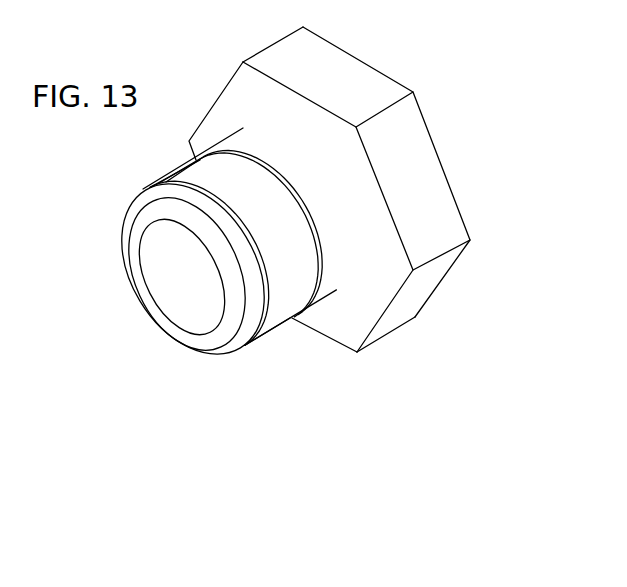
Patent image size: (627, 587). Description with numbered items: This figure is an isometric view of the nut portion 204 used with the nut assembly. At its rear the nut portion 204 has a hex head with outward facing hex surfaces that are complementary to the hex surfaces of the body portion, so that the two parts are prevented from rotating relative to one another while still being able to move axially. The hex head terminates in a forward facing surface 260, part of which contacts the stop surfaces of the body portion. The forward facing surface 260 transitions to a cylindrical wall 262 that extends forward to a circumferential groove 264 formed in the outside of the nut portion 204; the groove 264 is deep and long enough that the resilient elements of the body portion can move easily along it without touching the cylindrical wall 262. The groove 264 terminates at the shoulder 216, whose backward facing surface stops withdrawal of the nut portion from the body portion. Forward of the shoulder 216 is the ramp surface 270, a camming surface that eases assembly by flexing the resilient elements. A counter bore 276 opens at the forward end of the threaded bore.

The nut portion 204 is at (176, 101).
The shoulder 216 is at (138, 186).
The forward facing surface 260 is at (358, 318).
The cylindrical wall 262 is at (238, 142).
The circumferential groove 264 is at (282, 300).
The ramp surface 270 is at (237, 352).
The counter bore 276 is at (157, 272).